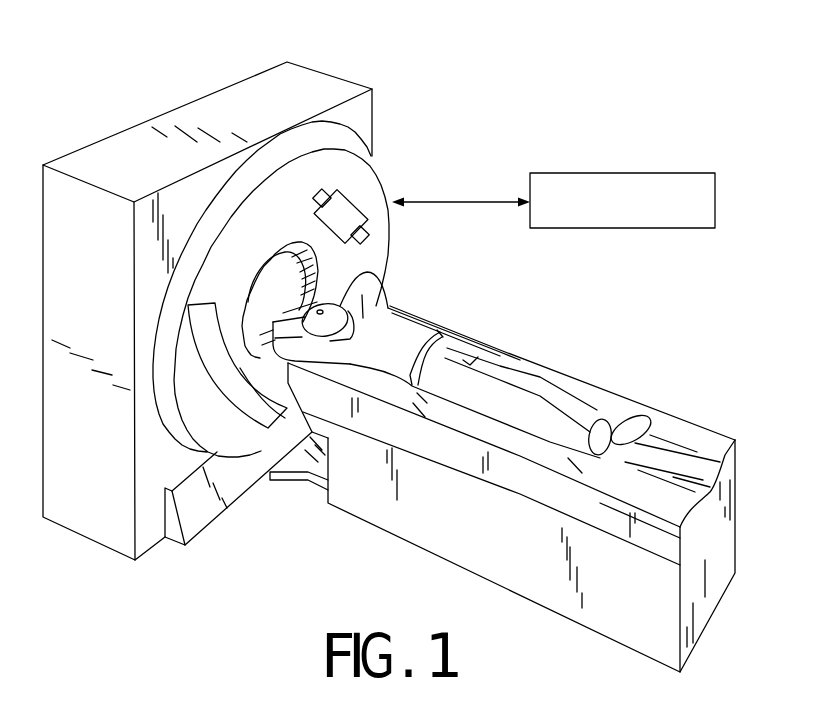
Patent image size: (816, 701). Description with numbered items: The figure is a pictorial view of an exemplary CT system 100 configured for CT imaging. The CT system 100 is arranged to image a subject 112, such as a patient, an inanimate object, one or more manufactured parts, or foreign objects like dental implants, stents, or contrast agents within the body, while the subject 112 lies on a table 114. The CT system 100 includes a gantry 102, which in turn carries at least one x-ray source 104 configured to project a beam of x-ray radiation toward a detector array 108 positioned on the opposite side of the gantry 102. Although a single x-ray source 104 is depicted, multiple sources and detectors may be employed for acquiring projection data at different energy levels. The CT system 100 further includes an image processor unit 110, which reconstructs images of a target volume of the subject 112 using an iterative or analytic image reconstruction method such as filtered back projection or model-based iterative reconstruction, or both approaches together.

The CT system 100 is at (660, 47).
The gantry 102 is at (316, 82).
The x-ray source 104 is at (355, 217).
The detector array 108 is at (257, 410).
The image processor unit 110 is at (676, 173).
The subject 112 is at (402, 329).
The table 114 is at (690, 433).